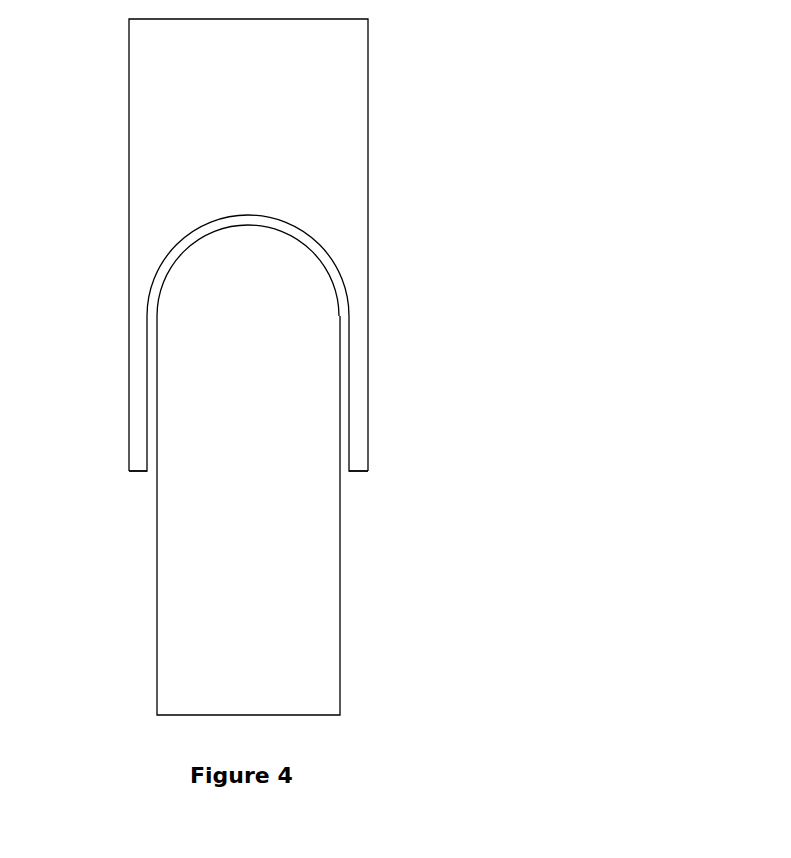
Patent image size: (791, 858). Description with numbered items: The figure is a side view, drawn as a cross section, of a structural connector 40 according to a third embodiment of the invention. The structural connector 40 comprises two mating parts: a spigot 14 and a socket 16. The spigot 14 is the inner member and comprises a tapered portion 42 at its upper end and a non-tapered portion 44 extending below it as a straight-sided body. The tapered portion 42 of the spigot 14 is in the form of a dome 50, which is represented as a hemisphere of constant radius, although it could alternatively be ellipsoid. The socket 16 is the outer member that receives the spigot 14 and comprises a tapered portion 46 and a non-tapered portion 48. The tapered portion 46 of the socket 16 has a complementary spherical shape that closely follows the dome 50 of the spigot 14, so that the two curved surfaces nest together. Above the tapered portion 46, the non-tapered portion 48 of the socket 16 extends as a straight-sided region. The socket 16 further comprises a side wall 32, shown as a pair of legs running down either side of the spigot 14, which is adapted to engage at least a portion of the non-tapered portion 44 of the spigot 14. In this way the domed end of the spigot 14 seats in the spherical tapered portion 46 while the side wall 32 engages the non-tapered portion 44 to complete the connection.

The spigot 14 is at (340, 614).
The socket 16 is at (368, 113).
The side wall 32 is at (135, 393).
The structural connector 40 is at (443, 417).
The tapered portion 42 is at (220, 284).
The non-tapered portion 44 is at (197, 567).
The tapered portion 46 is at (318, 243).
The non-tapered portion 48 is at (172, 123).
The dome 50 is at (248, 228).